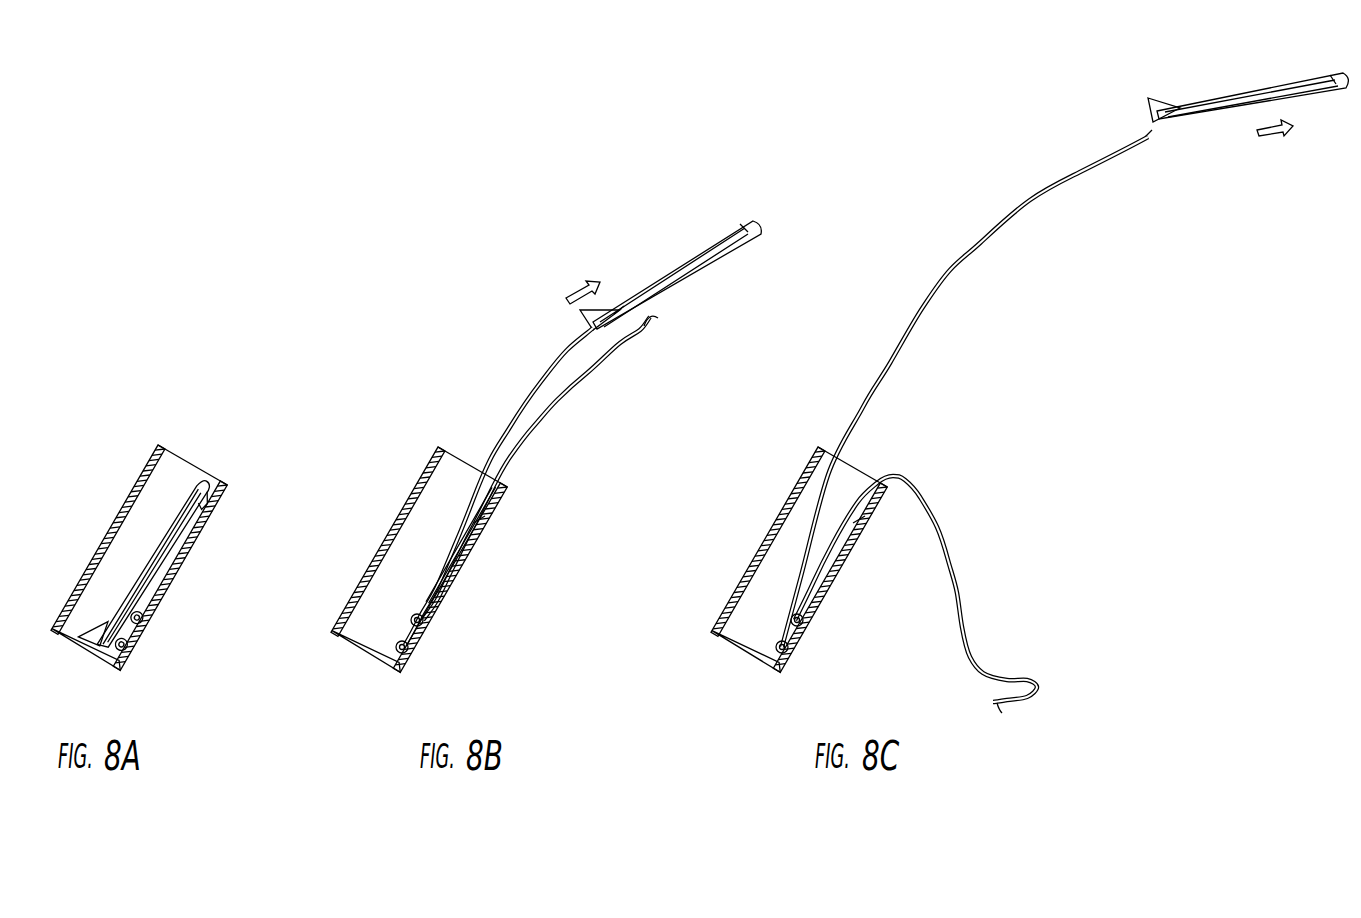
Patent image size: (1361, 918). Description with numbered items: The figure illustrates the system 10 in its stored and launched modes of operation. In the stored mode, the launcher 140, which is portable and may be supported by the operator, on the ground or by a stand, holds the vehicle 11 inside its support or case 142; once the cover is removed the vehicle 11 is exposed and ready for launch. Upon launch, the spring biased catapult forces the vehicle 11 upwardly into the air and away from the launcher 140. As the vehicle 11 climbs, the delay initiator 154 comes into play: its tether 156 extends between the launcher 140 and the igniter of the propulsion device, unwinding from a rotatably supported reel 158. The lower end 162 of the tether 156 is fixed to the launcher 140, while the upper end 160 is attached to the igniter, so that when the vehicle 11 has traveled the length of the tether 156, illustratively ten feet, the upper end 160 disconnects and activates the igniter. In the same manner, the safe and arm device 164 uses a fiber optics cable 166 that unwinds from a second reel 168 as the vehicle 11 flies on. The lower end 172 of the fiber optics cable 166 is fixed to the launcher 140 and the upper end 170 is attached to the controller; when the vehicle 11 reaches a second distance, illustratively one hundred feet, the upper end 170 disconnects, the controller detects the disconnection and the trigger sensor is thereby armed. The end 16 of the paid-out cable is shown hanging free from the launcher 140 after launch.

In FIG. 8A, the system 10 is at (165, 397).
In FIG. 8B, the system 10 is at (605, 172).
In FIG. 8C, the system 10 is at (1097, 72).
In FIG. 8B, the vehicle 11 is at (700, 217).
In FIG. 8C, the vehicle 11 is at (1275, 57).
In FIG. 8C, the tether end 16 is at (1002, 713).
In FIG. 8A, the launcher 140 is at (98, 510).
In FIG. 8B, the launcher 140 is at (395, 510).
In FIG. 8C, the launcher 140 is at (765, 480).
In FIG. 8A, the support or case 142 is at (168, 600).
In FIG. 8B, the support or case 142 is at (362, 657).
In FIG. 8C, the support or case 142 is at (745, 662).
In FIG. 8B, the delay initiator 154 is at (668, 331).
In FIG. 8B, the tether 156 is at (555, 402).
In FIG. 8C, the tether 156 is at (960, 592).
In FIG. 8B, the reel 158 is at (425, 626).
In FIG. 8C, the reel 158 is at (812, 627).
In FIG. 8B, the upper end of the tether 160 is at (653, 322).
In FIG. 8B, the lower end of the tether 162 is at (425, 603).
In FIG. 8C, the lower end of the tether 162 is at (802, 616).
In FIG. 8C, the safe and arm device 164 is at (997, 183).
In FIG. 8B, the fiber optics cable 166 is at (510, 428).
In FIG. 8C, the fiber optics cable 166 is at (952, 270).
In FIG. 8B, the reel 168 is at (420, 653).
In FIG. 8C, the reel 168 is at (792, 655).
In FIG. 8B, the upper end of the fiber optics cable 170 is at (620, 308).
In FIG. 8C, the upper end of the fiber optics cable 170 is at (1149, 137).
In FIG. 8B, the lower end of the fiber optics cable 172 is at (398, 642).
In FIG. 8C, the lower end of the fiber optics cable 172 is at (778, 638).